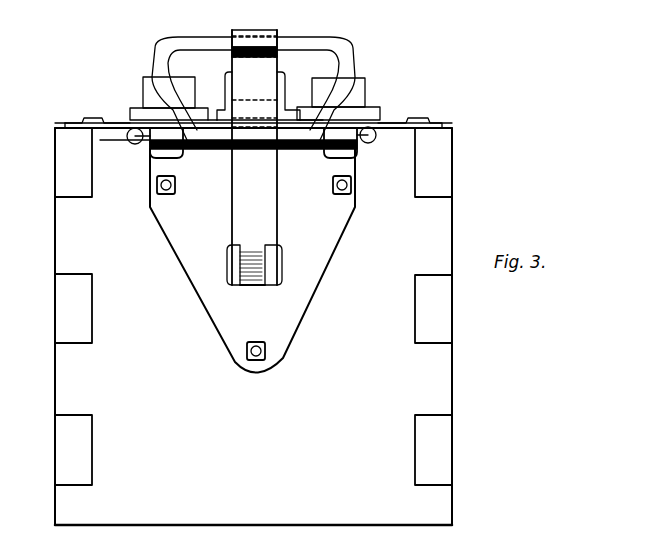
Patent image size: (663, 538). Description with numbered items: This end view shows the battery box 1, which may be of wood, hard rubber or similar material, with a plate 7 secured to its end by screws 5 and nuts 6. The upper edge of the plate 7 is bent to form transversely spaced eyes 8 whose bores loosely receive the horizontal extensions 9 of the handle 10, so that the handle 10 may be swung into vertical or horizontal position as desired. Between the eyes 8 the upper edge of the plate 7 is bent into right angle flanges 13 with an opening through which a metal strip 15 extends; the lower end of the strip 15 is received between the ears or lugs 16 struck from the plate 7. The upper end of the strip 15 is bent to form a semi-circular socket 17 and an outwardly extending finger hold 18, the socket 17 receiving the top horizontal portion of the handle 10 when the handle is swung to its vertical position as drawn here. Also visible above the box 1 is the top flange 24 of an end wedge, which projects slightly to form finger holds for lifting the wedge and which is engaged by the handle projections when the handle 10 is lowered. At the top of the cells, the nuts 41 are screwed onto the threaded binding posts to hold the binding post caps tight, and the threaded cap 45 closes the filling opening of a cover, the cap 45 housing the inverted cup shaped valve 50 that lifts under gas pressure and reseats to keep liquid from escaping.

The battery box 1 is at (187, 398).
The screws 5 is at (175, 186).
The nuts 6 is at (163, 196).
The plate 7 is at (330, 252).
The eyes 8 is at (176, 159).
The horizontal extensions 9 is at (137, 146).
The handle 10 is at (352, 63).
The right angle flanges 13 is at (300, 149).
The metal strips 15 is at (268, 210).
The ears or lugs 16 is at (240, 257).
The semi-circular socket 17 is at (276, 41).
The finger hold 18 is at (277, 63).
The top flange 24 is at (97, 122).
The nuts 41 is at (147, 95).
The cap 45 is at (282, 88).
The cup shaped valve 50 is at (253, 531).